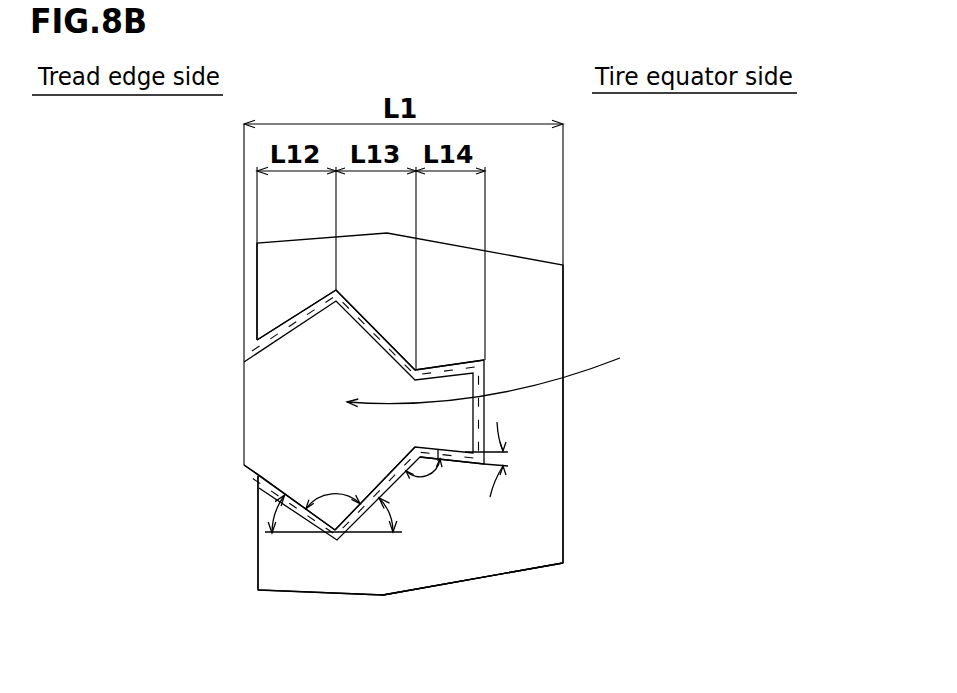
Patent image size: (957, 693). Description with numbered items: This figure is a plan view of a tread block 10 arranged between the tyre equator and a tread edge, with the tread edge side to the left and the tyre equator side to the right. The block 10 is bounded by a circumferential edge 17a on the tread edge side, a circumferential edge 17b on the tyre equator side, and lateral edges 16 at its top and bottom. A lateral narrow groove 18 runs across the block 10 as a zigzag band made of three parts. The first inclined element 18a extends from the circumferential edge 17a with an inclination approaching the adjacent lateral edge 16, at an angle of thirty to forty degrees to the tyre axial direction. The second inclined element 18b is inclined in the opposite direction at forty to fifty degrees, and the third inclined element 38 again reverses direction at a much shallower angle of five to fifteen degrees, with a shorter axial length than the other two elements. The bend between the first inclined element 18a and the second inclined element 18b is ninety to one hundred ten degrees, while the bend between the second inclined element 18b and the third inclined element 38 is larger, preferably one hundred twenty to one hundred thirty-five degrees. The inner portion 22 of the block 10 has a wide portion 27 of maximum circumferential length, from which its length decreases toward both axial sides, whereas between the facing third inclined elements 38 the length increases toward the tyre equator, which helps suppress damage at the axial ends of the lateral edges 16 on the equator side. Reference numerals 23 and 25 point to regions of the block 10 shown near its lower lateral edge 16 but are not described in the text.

The block 10 is at (230, 240).
The lateral edge 16 is at (538, 570).
The circumferential edge 17a is at (258, 317).
The circumferential edge 17b is at (563, 432).
The lateral narrow groove 18 is at (465, 360).
The first inclined element 18a is at (302, 323).
The second inclined element 18b is at (385, 343).
The inner portion 22 is at (528, 374).
The wide portion 27 is at (528, 374).
The groove bottom portion 23 is at (385, 563).
The bottom edge portion 25 is at (337, 563).
The third inclined element 38 is at (448, 362).